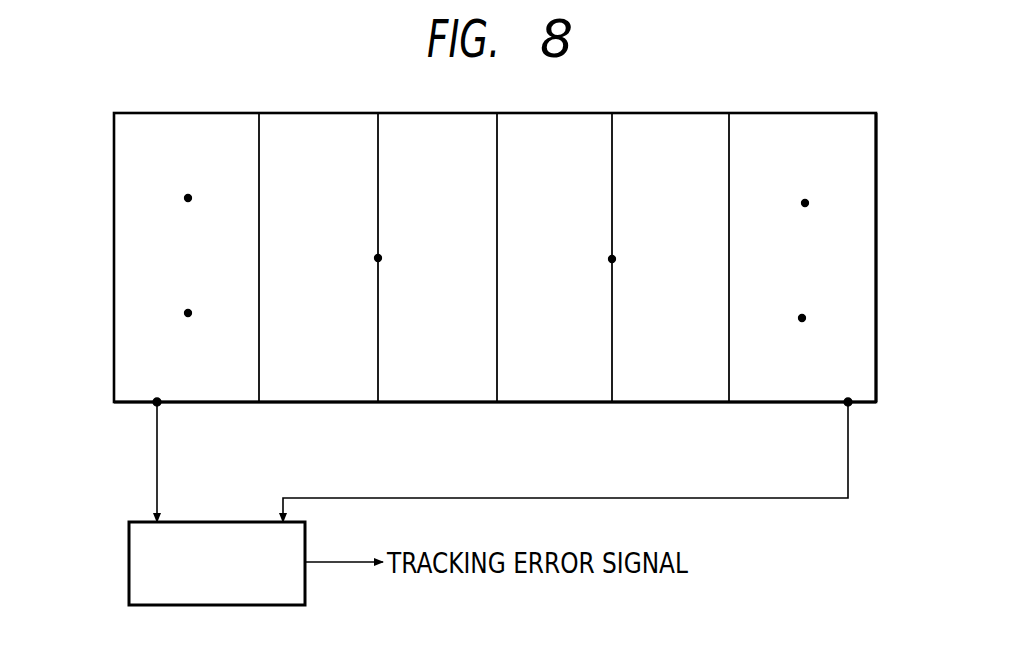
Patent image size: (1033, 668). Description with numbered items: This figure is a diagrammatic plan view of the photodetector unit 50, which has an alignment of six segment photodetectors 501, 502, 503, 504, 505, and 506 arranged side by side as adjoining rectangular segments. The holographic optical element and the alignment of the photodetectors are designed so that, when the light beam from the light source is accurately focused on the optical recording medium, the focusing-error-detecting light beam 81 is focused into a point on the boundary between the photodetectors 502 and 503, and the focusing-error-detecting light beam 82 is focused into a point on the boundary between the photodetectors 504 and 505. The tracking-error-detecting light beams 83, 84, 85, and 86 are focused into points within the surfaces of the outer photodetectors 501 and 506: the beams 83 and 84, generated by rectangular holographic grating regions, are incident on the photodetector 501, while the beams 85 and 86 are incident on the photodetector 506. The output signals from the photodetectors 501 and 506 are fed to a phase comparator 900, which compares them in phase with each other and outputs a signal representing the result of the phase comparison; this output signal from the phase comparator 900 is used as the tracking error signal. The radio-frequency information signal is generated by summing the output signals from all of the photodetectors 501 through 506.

The photodetector unit 50 is at (108, 392).
The photodetector 501 is at (186, 290).
The photodetector 502 is at (322, 412).
The photodetector 503 is at (462, 408).
The photodetector 504 is at (556, 414).
The photodetector 505 is at (690, 408).
The photodetector 506 is at (803, 408).
The focusing-error-detecting light beam 81 is at (380, 258).
The focusing-error-detecting light beam 82 is at (614, 259).
The tracking-error-detecting light beam 83 is at (186, 203).
The tracking-error-detecting light beam 84 is at (191, 308).
The tracking-error-detecting light beam 85 is at (807, 201).
The tracking-error-detecting light beam 86 is at (804, 315).
The phase comparator 900 is at (129, 545).